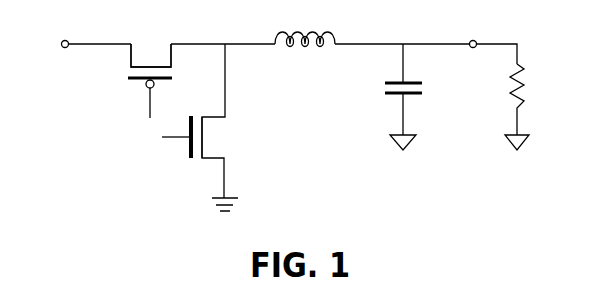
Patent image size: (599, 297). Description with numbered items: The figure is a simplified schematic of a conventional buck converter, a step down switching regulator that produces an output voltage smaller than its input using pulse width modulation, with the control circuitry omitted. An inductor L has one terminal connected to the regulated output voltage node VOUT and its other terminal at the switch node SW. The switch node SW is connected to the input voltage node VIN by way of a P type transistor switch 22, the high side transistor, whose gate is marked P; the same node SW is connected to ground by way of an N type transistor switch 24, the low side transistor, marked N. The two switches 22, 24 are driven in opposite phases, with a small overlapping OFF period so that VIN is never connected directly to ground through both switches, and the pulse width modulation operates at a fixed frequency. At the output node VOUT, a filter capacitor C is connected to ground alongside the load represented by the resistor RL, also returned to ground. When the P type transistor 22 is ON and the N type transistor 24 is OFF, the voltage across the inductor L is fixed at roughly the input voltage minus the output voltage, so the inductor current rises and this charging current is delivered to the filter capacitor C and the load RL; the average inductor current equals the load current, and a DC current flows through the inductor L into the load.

The P type transistor switch 22 is at (152, 50).
The N type transistor switch 24 is at (212, 135).
The inductor L is at (305, 23).
The filter capacitor C is at (385, 97).
The load RL is at (531, 107).
The inductor terminal node SW is at (223, 29).
The input voltage node VIN is at (82, 27).
The regulated output voltage node VOUT is at (436, 37).
The P type transistor P is at (128, 61).
The N type transistor N is at (225, 131).